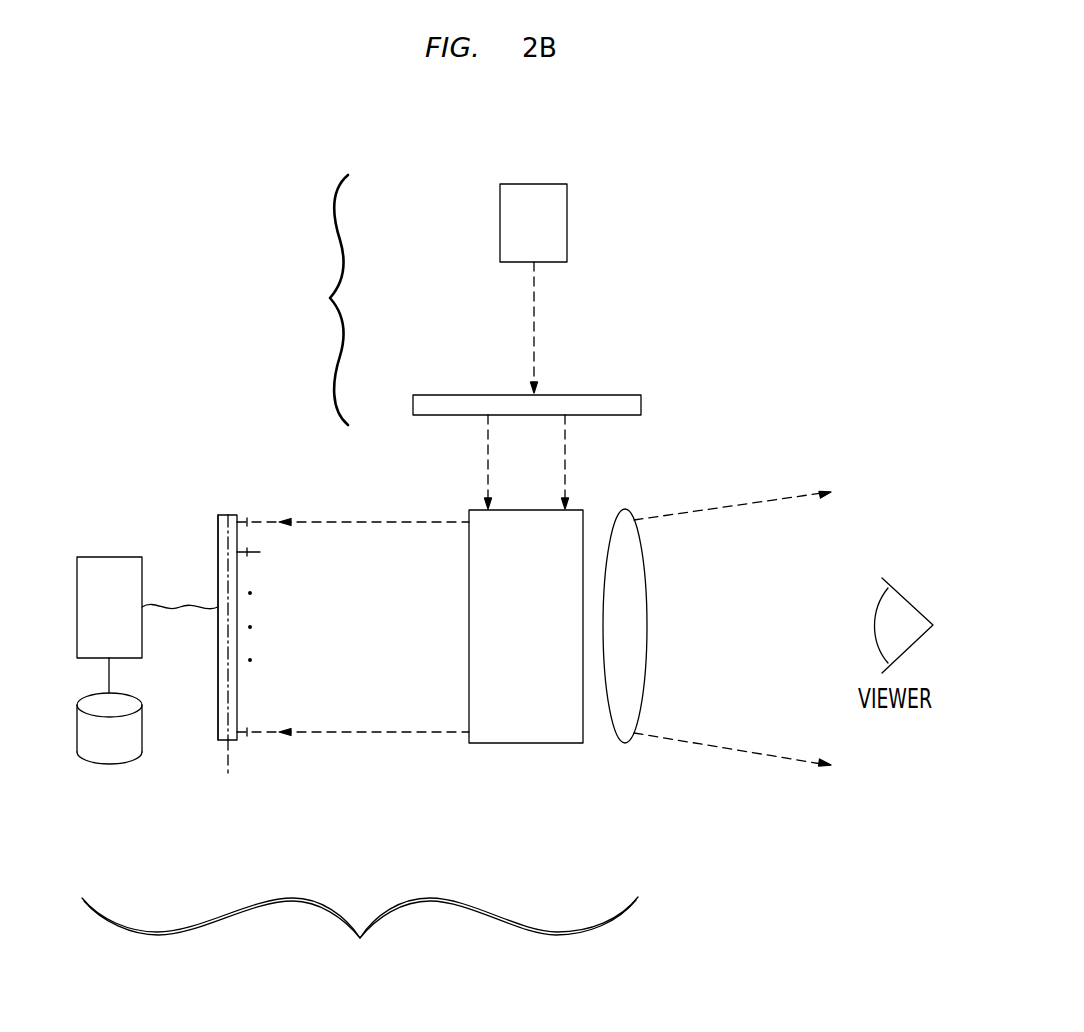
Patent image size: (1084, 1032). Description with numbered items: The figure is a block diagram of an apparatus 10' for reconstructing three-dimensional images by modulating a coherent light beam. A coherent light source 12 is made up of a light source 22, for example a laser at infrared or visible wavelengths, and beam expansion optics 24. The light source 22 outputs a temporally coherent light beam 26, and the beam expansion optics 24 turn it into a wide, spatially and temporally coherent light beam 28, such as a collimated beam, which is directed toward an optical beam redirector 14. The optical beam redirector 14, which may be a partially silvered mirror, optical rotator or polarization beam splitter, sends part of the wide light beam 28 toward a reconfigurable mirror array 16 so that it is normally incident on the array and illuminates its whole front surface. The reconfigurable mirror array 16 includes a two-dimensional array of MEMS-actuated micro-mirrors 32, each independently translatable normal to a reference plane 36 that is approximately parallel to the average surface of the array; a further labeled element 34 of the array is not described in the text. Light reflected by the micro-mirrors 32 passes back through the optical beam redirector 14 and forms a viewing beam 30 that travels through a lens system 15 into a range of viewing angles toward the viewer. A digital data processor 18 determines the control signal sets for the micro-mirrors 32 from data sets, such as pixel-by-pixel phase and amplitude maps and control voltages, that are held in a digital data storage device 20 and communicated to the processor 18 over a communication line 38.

The apparatus 10' is at (360, 942).
The coherent light source 12 is at (320, 300).
The optical beam redirector 14 is at (543, 639).
The lens system 15 is at (636, 639).
The reconfigurable mirror array 16 is at (258, 465).
The digital data processor 18 is at (120, 628).
The digital data storage device 20 is at (120, 751).
The light source 22 is at (545, 239).
The beam expansion optics 24 is at (643, 399).
The light beam 26 is at (536, 348).
The wide light beam 28 is at (542, 472).
The viewing beam 30 is at (740, 641).
The micro-mirrors 32 is at (251, 527).
The shutter substrate 34 is at (218, 548).
The reference plane 36 is at (228, 773).
The communication line 38 is at (107, 688).